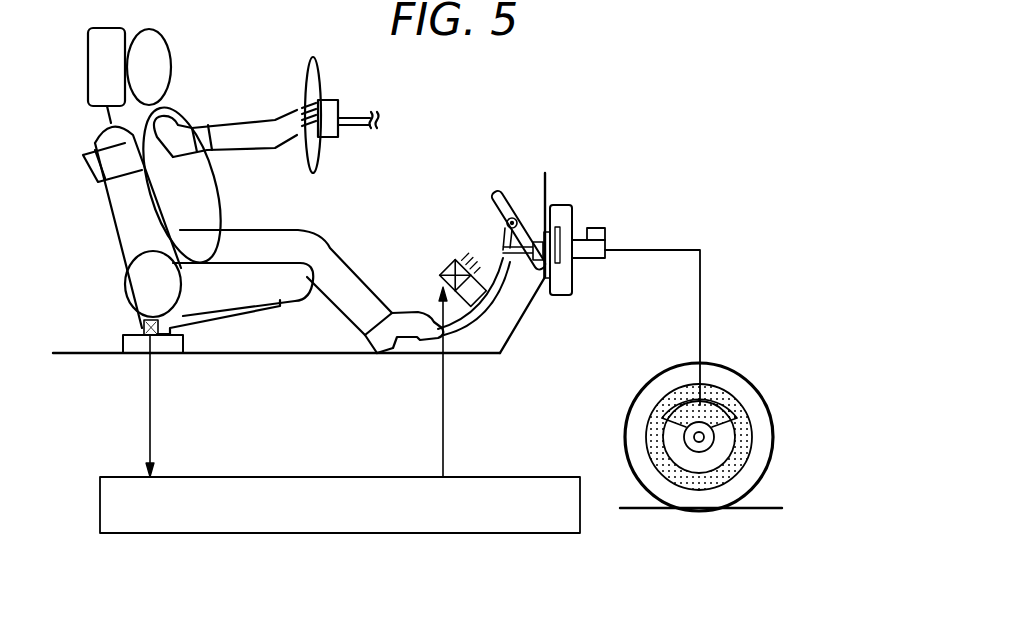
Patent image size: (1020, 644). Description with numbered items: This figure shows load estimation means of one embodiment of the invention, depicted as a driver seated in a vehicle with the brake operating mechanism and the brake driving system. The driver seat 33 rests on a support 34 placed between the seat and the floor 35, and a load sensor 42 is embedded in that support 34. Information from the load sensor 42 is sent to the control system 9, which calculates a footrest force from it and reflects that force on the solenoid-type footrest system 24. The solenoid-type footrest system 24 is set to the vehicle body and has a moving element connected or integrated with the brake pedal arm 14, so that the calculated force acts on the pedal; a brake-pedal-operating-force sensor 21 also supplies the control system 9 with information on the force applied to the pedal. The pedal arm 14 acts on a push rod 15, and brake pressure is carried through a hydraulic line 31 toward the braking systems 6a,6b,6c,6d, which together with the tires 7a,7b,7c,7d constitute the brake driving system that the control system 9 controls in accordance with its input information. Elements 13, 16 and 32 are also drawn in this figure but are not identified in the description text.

The control system 9 is at (322, 477).
The floor panel / toe board 13 is at (441, 354).
The brake pedal arm 14 is at (493, 290).
The push rod 15 is at (512, 222).
The brake booster 16 is at (560, 205).
The brake-pedal-operating-force sensor 21 is at (428, 330).
The solenoid-type footrest system 24 is at (468, 262).
The hydraulic line 31 is at (678, 250).
The master cylinder 32 is at (597, 246).
The driver seat 33 is at (128, 225).
The support 34 is at (142, 330).
The floor 35 is at (270, 353).
The load sensor 42 is at (143, 337).
The braking systems 6a,6b,6c,6d is at (710, 403).
The tires 7a,7b,7c,7d is at (757, 417).